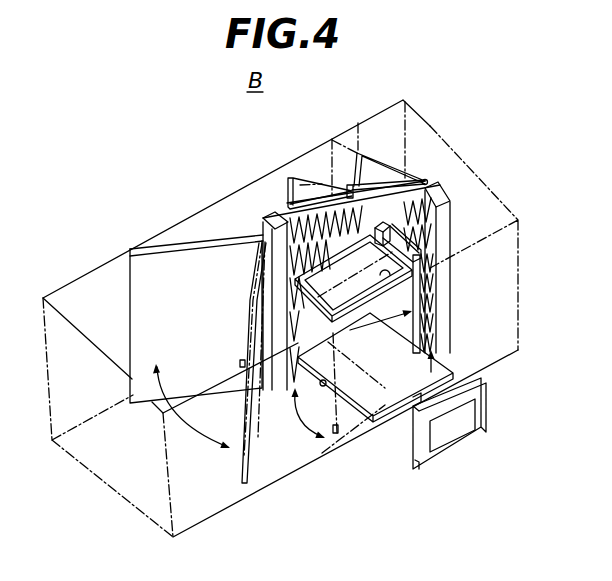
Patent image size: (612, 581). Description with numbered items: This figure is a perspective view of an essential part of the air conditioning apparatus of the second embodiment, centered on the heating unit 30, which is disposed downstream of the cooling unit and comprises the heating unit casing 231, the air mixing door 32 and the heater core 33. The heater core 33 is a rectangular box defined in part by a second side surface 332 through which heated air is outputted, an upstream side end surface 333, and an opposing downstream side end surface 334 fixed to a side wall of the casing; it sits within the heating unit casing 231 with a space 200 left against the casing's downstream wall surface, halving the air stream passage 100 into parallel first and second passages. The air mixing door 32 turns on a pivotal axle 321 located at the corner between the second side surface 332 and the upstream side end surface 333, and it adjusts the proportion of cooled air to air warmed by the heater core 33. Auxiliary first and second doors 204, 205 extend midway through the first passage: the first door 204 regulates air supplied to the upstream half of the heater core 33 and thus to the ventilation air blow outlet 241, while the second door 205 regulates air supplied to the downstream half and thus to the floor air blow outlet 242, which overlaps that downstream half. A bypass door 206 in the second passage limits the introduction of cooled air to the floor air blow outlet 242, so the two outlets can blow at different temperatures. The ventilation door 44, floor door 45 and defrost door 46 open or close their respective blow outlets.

The heating unit 30 is at (430, 122).
The air mixing door 32 is at (167, 318).
The heater core 33 is at (436, 183).
The ventilation door 44 is at (381, 398).
The floor door 45 is at (414, 464).
The defrost door 46 is at (420, 256).
The air stream passage 100 is at (147, 470).
The space 200 is at (487, 202).
The first door 204 is at (302, 180).
The second door 205 is at (380, 165).
The bypass door 206 is at (415, 250).
The heating unit casing 231 is at (148, 245).
The ventilation air blow outlet 241 is at (338, 427).
The floor air blow outlet 242 is at (413, 288).
The pivotal axle 321 is at (260, 244).
The second side surface 332 is at (402, 217).
The upstream side end surface 333 is at (262, 226).
The downstream side end surface 334 is at (412, 222).